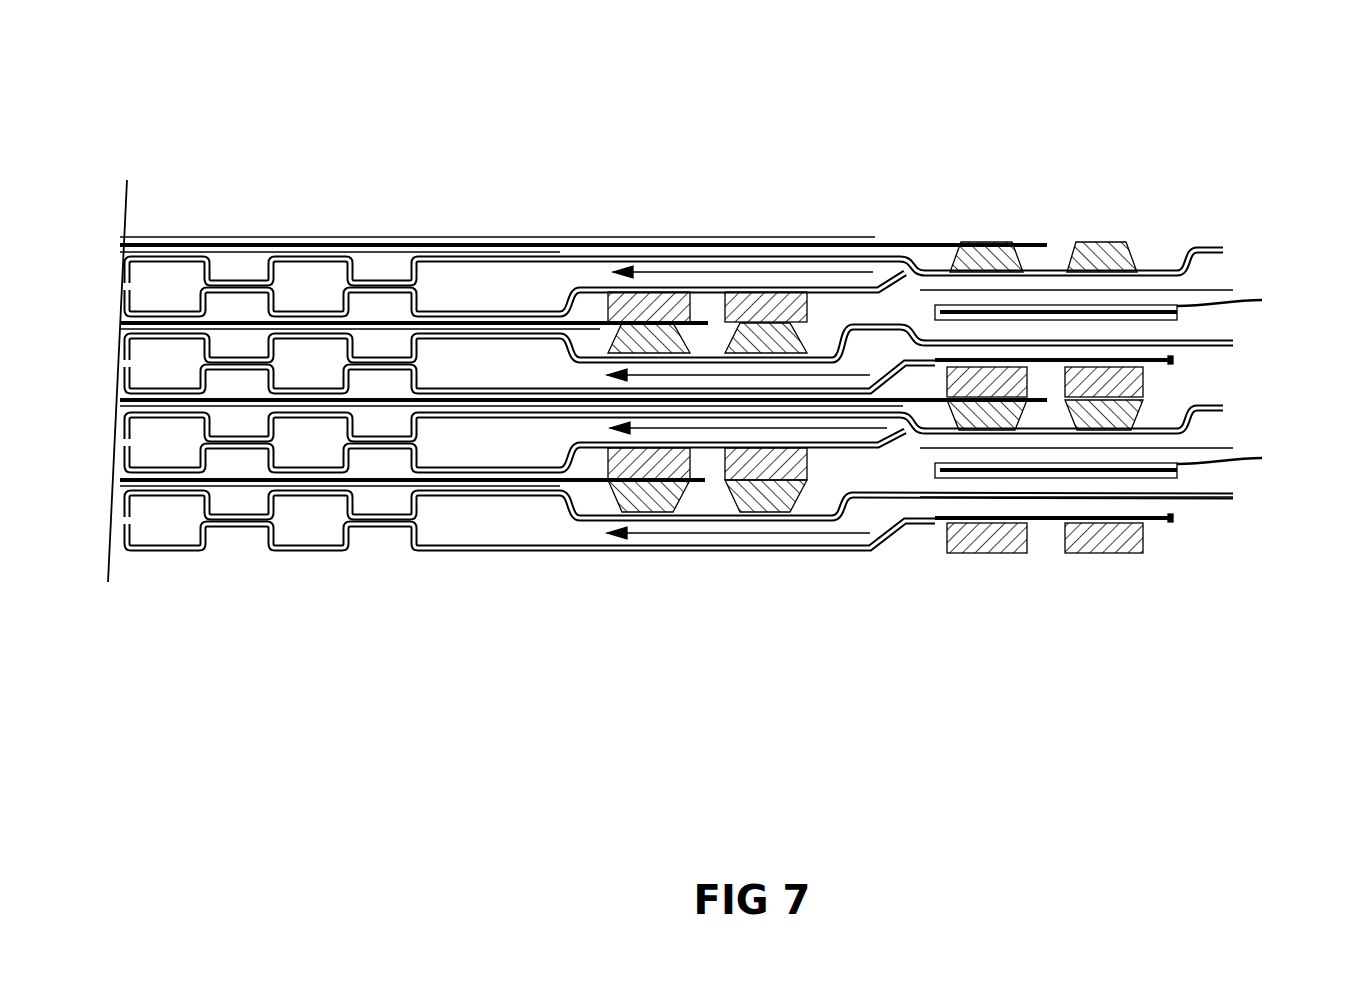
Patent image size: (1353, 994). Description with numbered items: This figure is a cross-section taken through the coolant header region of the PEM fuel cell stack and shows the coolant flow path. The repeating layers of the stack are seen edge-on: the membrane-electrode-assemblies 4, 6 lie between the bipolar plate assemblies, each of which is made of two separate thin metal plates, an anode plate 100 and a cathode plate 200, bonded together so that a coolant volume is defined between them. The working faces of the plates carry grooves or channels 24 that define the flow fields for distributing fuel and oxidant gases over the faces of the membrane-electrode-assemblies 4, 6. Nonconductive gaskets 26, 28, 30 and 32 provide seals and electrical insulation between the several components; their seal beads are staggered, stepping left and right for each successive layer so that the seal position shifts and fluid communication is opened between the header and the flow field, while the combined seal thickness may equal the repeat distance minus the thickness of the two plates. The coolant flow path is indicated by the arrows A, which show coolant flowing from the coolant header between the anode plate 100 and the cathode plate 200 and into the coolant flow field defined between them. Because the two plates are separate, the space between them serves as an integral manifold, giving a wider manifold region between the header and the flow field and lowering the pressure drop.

The membrane-electrode-assembly 4 is at (318, 248).
The membrane-electrode-assembly 6 is at (380, 323).
The channel 24 is at (773, 340).
The nonconductive gasket 26 is at (1120, 377).
The nonconductive gasket 28 is at (1100, 253).
The nonconductive gasket 30 is at (627, 450).
The nonconductive gasket 32 is at (768, 495).
The coolant flow path arrows A is at (937, 330).
The anode plate 100 is at (1223, 250).
The cathode plate 200 is at (1233, 290).